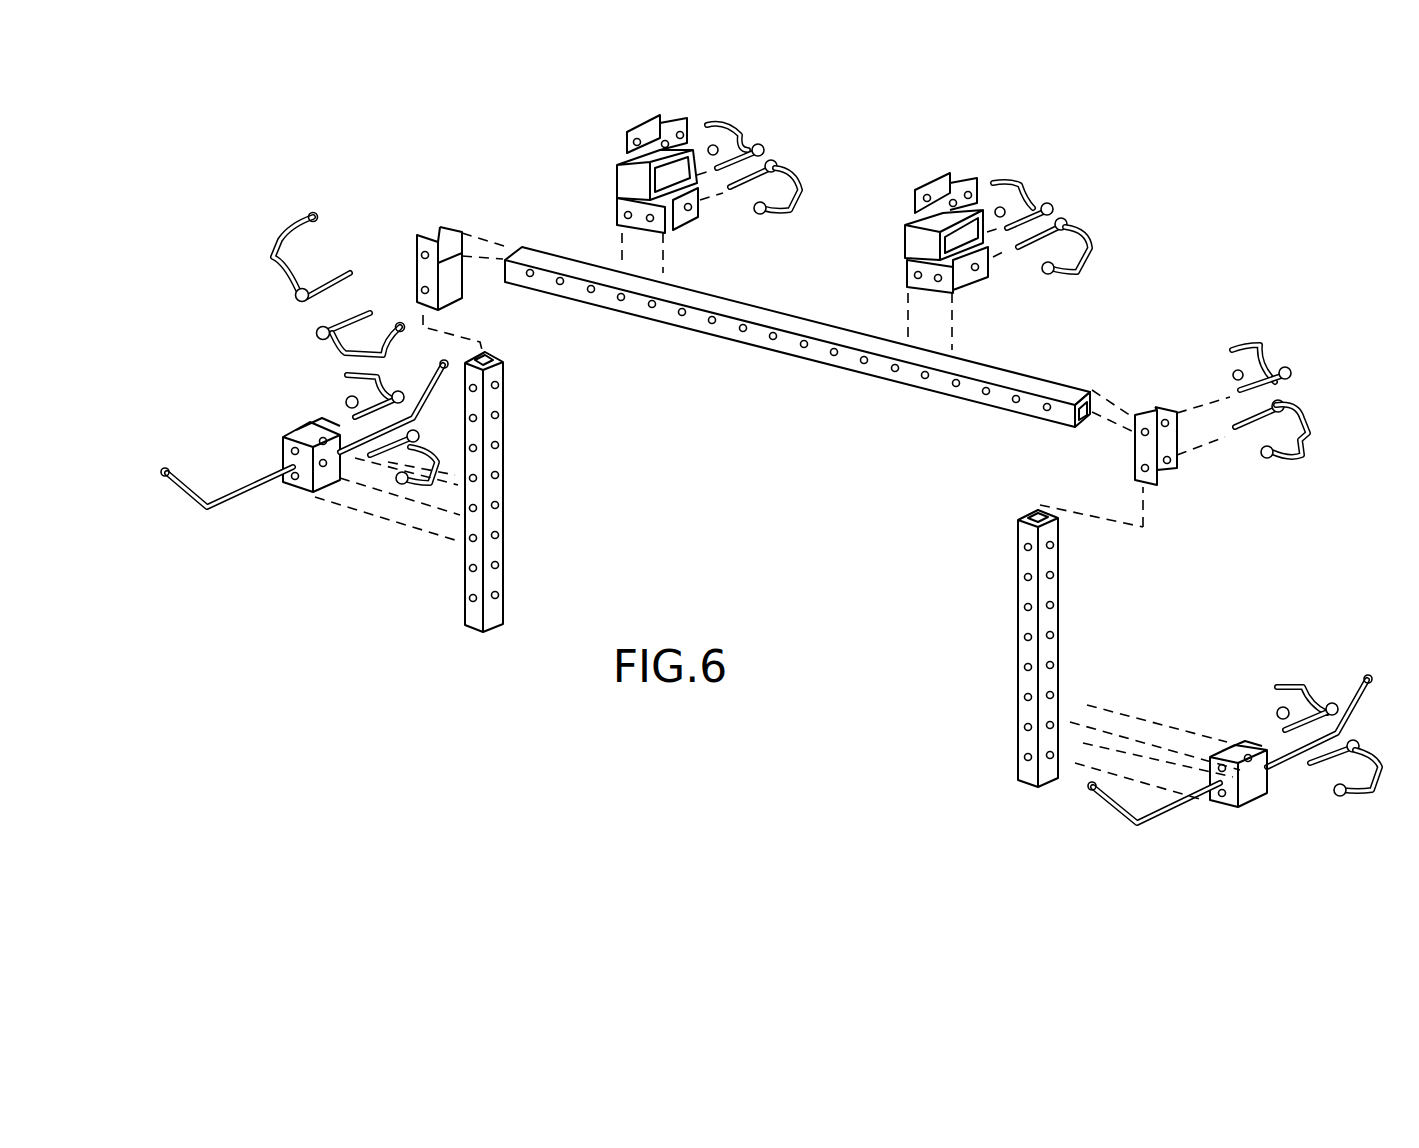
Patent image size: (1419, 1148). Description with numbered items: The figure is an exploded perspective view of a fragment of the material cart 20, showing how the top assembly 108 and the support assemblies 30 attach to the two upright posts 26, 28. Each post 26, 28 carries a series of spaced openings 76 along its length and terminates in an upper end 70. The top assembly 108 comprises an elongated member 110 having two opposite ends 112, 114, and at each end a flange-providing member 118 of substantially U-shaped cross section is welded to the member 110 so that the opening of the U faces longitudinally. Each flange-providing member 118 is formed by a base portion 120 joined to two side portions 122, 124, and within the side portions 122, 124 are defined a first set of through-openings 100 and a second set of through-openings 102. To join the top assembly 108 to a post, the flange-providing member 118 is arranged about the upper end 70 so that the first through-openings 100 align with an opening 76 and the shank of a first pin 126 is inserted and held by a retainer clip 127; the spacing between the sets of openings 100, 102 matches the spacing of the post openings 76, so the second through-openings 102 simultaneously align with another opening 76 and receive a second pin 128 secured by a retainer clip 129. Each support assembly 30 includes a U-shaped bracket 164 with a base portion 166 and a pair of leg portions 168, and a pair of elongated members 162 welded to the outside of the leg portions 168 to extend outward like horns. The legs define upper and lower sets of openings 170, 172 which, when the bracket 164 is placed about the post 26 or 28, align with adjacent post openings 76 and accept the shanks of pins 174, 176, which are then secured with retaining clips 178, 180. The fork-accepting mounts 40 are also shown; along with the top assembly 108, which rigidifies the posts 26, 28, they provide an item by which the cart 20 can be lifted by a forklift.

The material cart 20 is at (252, 190).
The post 26 is at (462, 597).
The post 28 is at (1060, 602).
The support assembly 30 is at (283, 435).
The fork-accepting mount 40 is at (905, 232).
The upper end 70 is at (505, 370).
The opening 76 is at (472, 528).
The first set of through-openings 100 is at (425, 253).
The second set of through-openings 102 is at (425, 290).
The top assembly 108 is at (575, 187).
The elongated member 110 is at (805, 360).
The end 112 is at (552, 252).
The end 114 is at (1060, 425).
The flange-providing member 118 is at (425, 250).
The base portion 120 is at (520, 285).
The side portion 122 is at (425, 258).
The side portion 124 is at (450, 230).
The first pin 126 is at (278, 258).
The retainer clip 127 is at (298, 228).
The second pin 128 is at (318, 332).
The retainer clip 129 is at (400, 340).
The elongated member 162 is at (208, 510).
The U-shaped bracket 164 is at (290, 482).
The base portion 166 is at (1265, 790).
The leg portion 168 is at (300, 490).
The opening 170 is at (292, 450).
The opening 172 is at (290, 490).
The pin 174 is at (345, 390).
The pin 176 is at (370, 470).
The retaining clip 178 is at (400, 400).
The retaining clip 180 is at (420, 450).